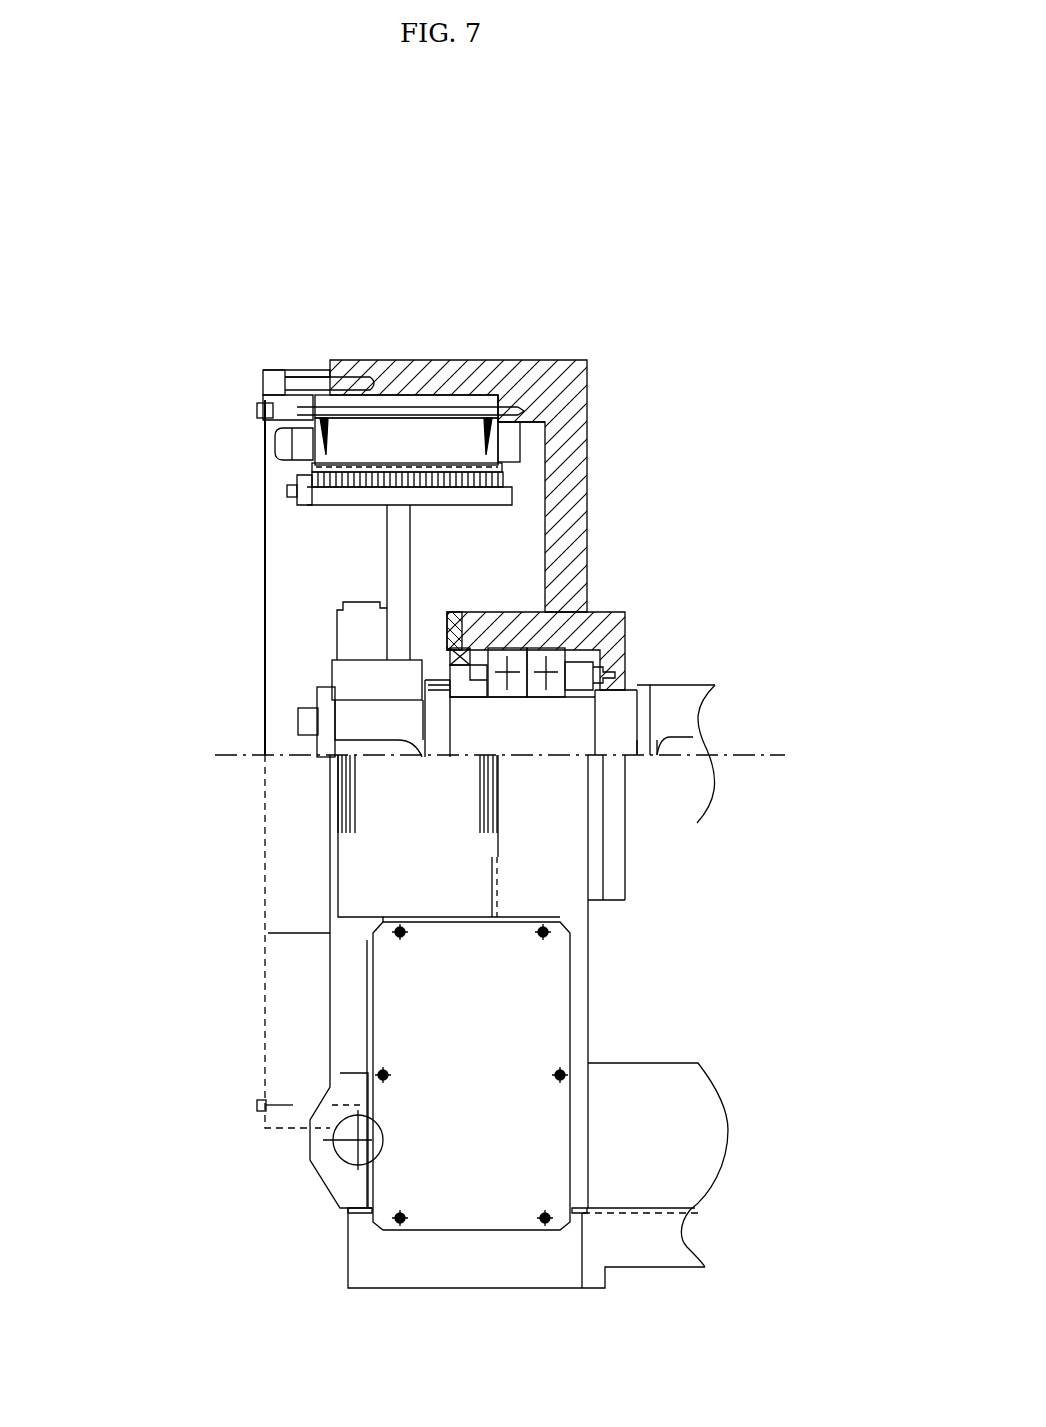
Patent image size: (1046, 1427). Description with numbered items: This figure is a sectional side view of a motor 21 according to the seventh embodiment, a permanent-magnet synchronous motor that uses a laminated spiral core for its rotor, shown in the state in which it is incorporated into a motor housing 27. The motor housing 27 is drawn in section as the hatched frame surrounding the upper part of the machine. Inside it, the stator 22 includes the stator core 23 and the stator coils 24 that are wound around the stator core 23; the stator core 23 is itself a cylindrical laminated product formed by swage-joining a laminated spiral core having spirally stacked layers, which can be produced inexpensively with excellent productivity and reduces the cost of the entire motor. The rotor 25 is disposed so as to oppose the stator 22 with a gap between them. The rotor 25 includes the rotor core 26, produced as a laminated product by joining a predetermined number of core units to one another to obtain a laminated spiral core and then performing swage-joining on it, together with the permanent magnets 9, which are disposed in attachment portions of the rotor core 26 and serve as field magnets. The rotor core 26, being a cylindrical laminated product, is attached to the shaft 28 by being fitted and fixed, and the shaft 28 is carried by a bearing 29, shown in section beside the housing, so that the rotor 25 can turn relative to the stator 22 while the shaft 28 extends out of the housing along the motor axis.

The permanent magnet 9 is at (420, 462).
The motor 21 is at (252, 678).
The stator 22 is at (527, 448).
The stator core 23 is at (467, 403).
The stator coil 24 is at (507, 445).
The rotor 25 is at (277, 492).
The rotor core 26 is at (337, 487).
The motor housing 27 is at (580, 483).
The shaft 28 is at (686, 692).
The bearing 29 is at (555, 665).